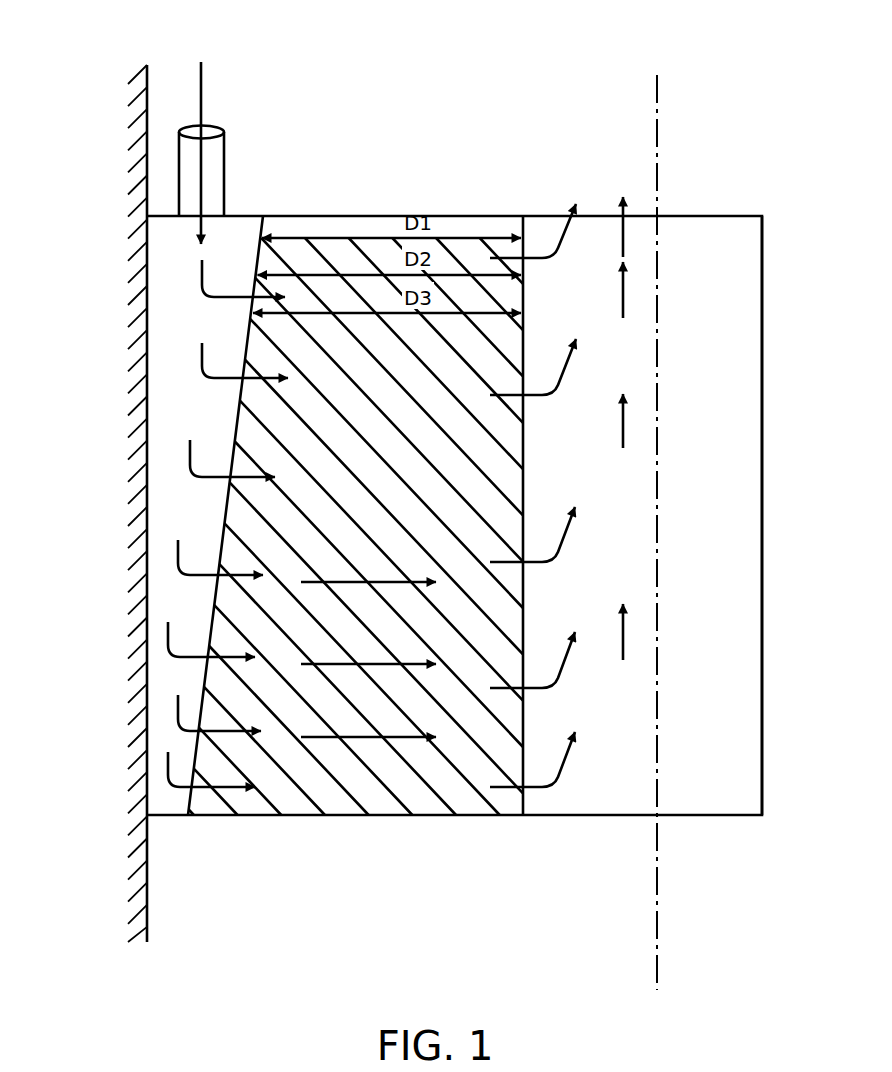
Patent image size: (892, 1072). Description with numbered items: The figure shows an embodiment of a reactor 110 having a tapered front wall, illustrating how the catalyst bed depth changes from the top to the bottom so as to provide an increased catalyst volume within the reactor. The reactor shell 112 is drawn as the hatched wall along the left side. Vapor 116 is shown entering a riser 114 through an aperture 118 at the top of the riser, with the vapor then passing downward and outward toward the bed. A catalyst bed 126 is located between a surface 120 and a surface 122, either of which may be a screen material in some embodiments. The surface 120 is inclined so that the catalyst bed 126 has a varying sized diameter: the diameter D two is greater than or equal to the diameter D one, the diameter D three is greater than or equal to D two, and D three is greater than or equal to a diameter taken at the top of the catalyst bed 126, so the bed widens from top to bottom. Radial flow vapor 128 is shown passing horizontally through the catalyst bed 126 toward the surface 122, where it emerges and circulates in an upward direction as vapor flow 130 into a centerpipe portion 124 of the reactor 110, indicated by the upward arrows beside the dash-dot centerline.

The reactor 110 is at (147, 778).
The reactor shell 112 is at (147, 80).
The riser 114 is at (225, 174).
The vapor 116 is at (203, 82).
The aperture 118 is at (217, 135).
The surface 120 is at (250, 347).
The surface 122 is at (526, 452).
The centerpipe portion 124 is at (763, 492).
The catalyst bed 126 is at (368, 698).
The radial flow vapor 128 is at (418, 668).
The vapor flow 130 is at (562, 768).